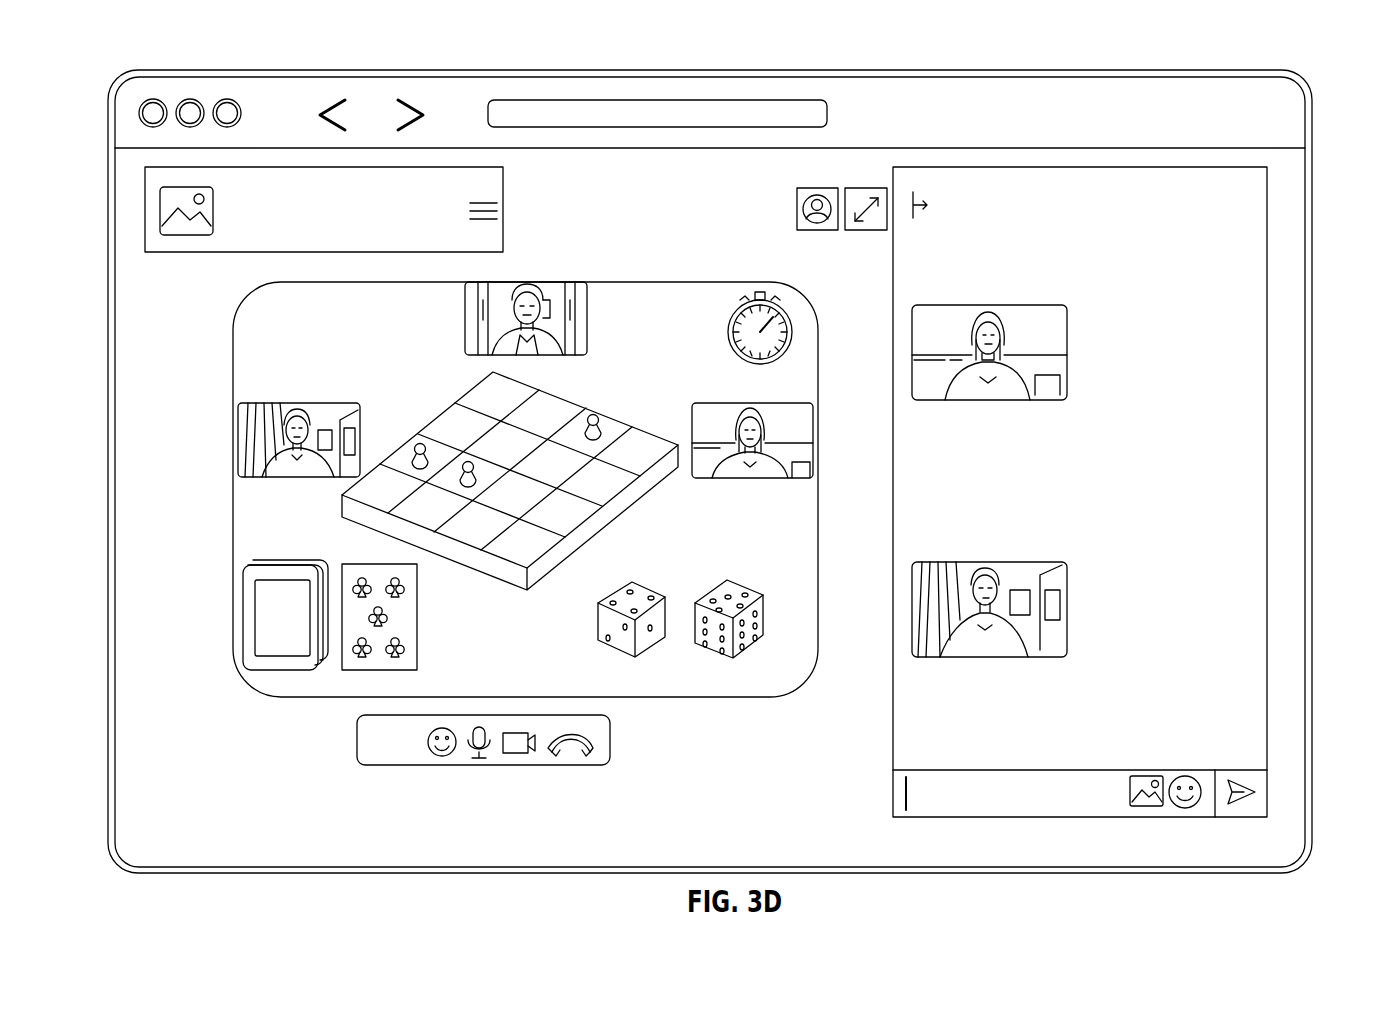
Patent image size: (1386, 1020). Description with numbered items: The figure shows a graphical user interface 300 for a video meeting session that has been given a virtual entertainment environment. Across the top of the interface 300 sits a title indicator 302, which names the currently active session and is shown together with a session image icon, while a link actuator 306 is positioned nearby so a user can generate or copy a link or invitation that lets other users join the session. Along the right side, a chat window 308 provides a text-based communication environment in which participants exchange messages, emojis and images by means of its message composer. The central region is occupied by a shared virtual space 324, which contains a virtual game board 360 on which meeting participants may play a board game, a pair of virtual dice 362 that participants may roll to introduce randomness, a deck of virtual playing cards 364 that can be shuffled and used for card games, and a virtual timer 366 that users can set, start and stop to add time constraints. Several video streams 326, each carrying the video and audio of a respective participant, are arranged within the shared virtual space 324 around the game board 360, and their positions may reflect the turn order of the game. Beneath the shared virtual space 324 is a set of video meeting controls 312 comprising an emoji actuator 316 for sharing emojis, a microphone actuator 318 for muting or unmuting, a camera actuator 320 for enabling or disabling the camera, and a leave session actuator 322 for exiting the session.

The graphical user interface 300 is at (147, 65).
The title indicator 302 is at (158, 204).
The link actuator 306 is at (864, 188).
The chat window 308 is at (1267, 240).
The set of video meeting controls 312 is at (525, 777).
The emoji actuator 316 is at (441, 757).
The microphone actuator 318 is at (479, 760).
The camera actuator 320 is at (521, 755).
The leave session actuator 322 is at (581, 754).
The shared virtual space 324 is at (233, 333).
The video streams 326 is at (465, 310).
The virtual game board 360 is at (467, 394).
The virtual dice 362 is at (735, 658).
The deck of virtual playing cards 364 is at (243, 614).
The virtual timer 366 is at (752, 298).